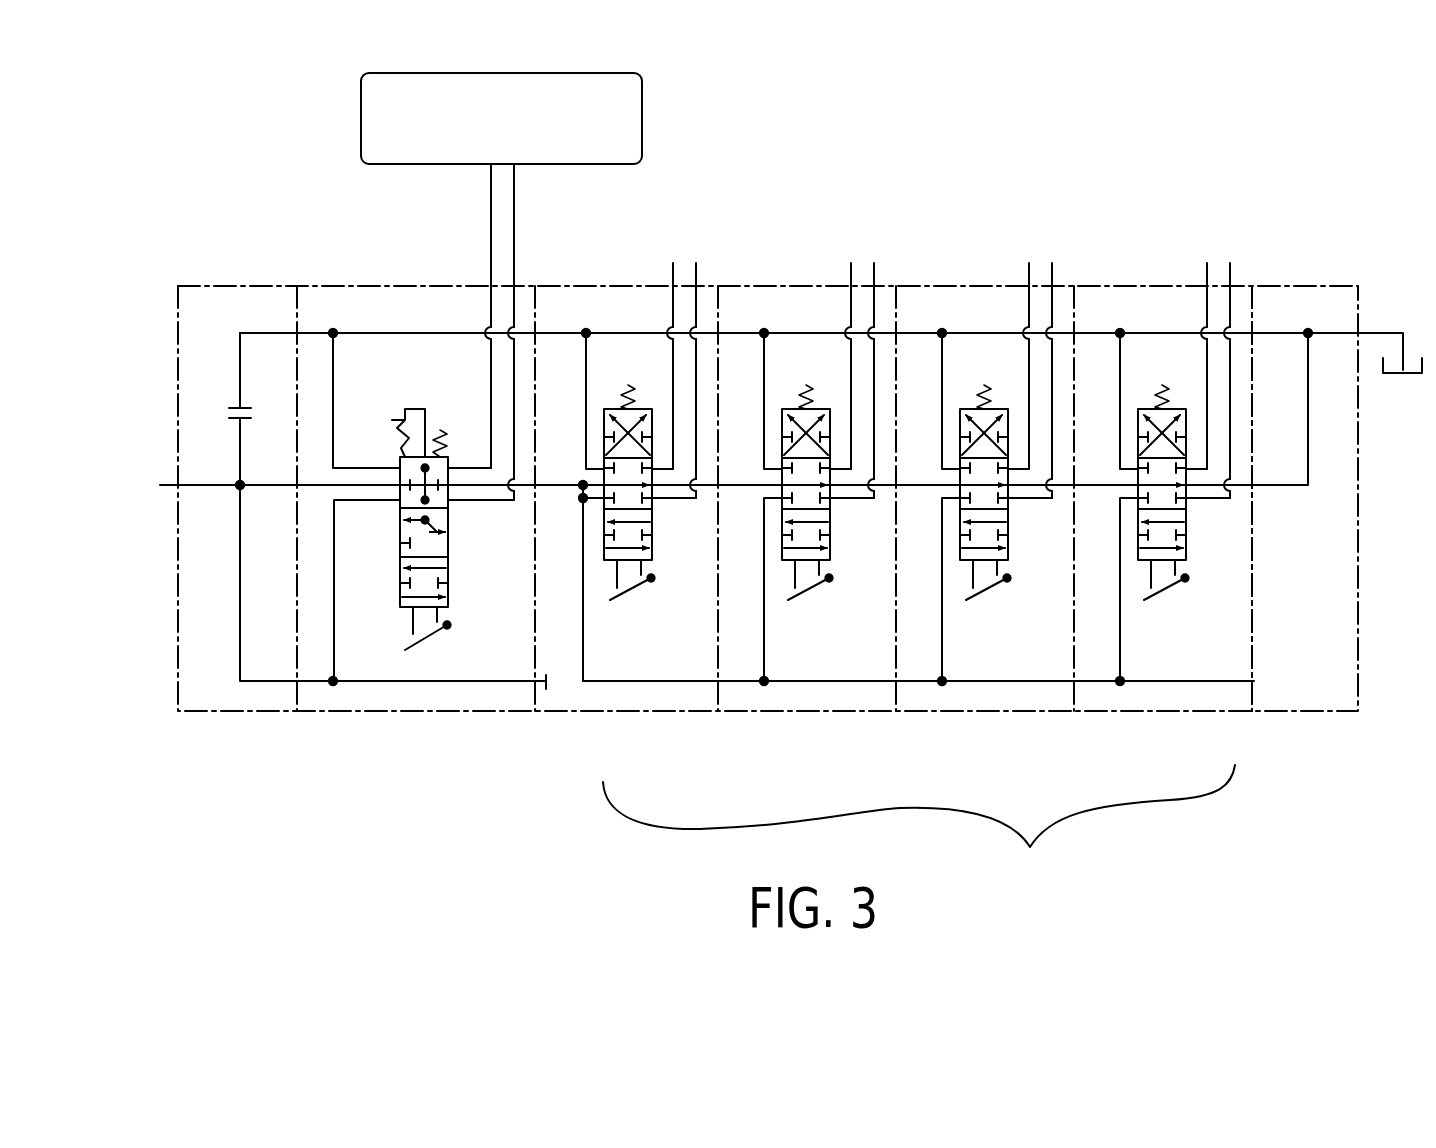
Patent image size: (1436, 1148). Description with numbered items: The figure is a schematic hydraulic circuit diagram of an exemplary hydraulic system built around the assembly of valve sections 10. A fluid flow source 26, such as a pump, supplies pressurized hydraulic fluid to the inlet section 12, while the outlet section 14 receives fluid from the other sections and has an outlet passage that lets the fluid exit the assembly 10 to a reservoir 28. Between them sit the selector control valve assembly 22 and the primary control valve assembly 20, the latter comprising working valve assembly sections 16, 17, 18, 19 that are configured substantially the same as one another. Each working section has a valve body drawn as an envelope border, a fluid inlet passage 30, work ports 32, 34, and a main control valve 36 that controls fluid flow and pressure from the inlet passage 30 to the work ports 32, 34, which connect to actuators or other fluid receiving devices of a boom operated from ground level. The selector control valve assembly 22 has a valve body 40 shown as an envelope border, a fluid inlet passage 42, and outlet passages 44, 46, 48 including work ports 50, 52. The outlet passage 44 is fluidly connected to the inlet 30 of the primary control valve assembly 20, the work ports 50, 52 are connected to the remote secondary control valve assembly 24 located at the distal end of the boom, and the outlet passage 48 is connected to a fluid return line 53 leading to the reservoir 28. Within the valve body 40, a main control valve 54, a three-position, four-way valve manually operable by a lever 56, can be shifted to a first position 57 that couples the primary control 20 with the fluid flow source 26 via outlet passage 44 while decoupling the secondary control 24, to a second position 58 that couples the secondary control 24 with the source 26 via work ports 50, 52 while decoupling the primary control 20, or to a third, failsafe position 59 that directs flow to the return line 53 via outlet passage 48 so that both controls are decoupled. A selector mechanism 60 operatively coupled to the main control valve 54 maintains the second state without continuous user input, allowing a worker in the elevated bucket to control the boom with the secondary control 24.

The assembly of valve sections 10 is at (220, 180).
The inlet section 12 is at (235, 718).
The outlet section 14 is at (1306, 718).
The working valve assembly section 16 is at (621, 718).
The working valve assembly section 17 is at (799, 718).
The working valve assembly section 18 is at (978, 718).
The working valve assembly section 19 is at (1156, 718).
The primary control valve assembly 20 is at (919, 824).
The selector control valve assembly 22 is at (455, 476).
The secondary control valve assembly 24 is at (487, 137).
The fluid flow source 26 is at (153, 495).
The reservoir 28 is at (1396, 377).
The fluid inlet passage 30 is at (543, 488).
The work port 32 is at (672, 284).
The work port 34 is at (699, 284).
The main control valve 36 is at (666, 543).
The valve body 40 is at (376, 285).
The fluid inlet passage 42 is at (298, 488).
The outlet passage 44 is at (513, 502).
The outlet passage 46 is at (538, 680).
The outlet passage 48 is at (527, 335).
The work port 50 is at (490, 284).
The work port 52 is at (519, 284).
The fluid return line 53 is at (1328, 332).
The main control valve 54 is at (397, 551).
The lever 56 is at (440, 641).
The first position 57 is at (394, 509).
The second position 58 is at (394, 558).
The third position 59 is at (394, 457).
The selector mechanism 60 is at (437, 402).